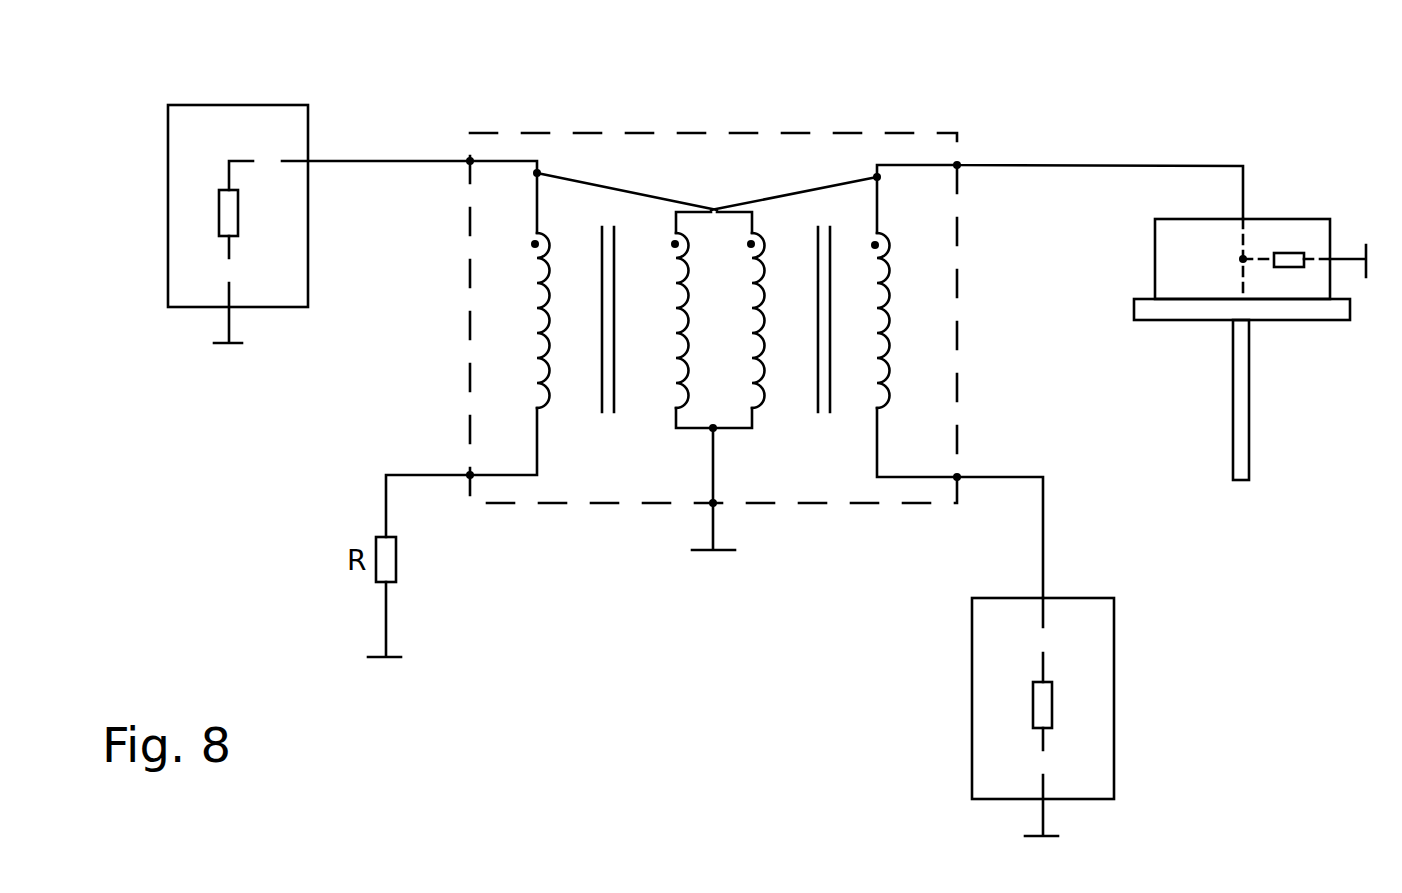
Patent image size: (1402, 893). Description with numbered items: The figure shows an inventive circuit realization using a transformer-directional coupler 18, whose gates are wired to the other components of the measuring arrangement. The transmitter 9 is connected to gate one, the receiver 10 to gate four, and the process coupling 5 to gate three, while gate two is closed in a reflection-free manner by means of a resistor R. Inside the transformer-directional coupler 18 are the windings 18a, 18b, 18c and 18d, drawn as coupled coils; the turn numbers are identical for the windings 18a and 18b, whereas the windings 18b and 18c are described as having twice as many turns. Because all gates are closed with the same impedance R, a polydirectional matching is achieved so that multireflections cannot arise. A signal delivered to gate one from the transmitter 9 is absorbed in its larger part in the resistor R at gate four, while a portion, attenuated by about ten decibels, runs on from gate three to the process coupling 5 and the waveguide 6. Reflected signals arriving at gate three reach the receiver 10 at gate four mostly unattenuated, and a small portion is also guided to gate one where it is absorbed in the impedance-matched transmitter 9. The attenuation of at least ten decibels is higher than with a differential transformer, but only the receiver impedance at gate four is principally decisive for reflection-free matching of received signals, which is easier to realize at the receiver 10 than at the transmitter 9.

The process coupling 5 is at (1330, 232).
The waveguide 6 is at (1249, 430).
The transmitter 9 is at (188, 103).
The receiver 10 is at (1115, 695).
The transformer-directional coupler 18 is at (683, 132).
The winding 18a is at (530, 320).
The winding 18b is at (675, 368).
The winding 18c is at (768, 372).
The winding 18d is at (890, 303).